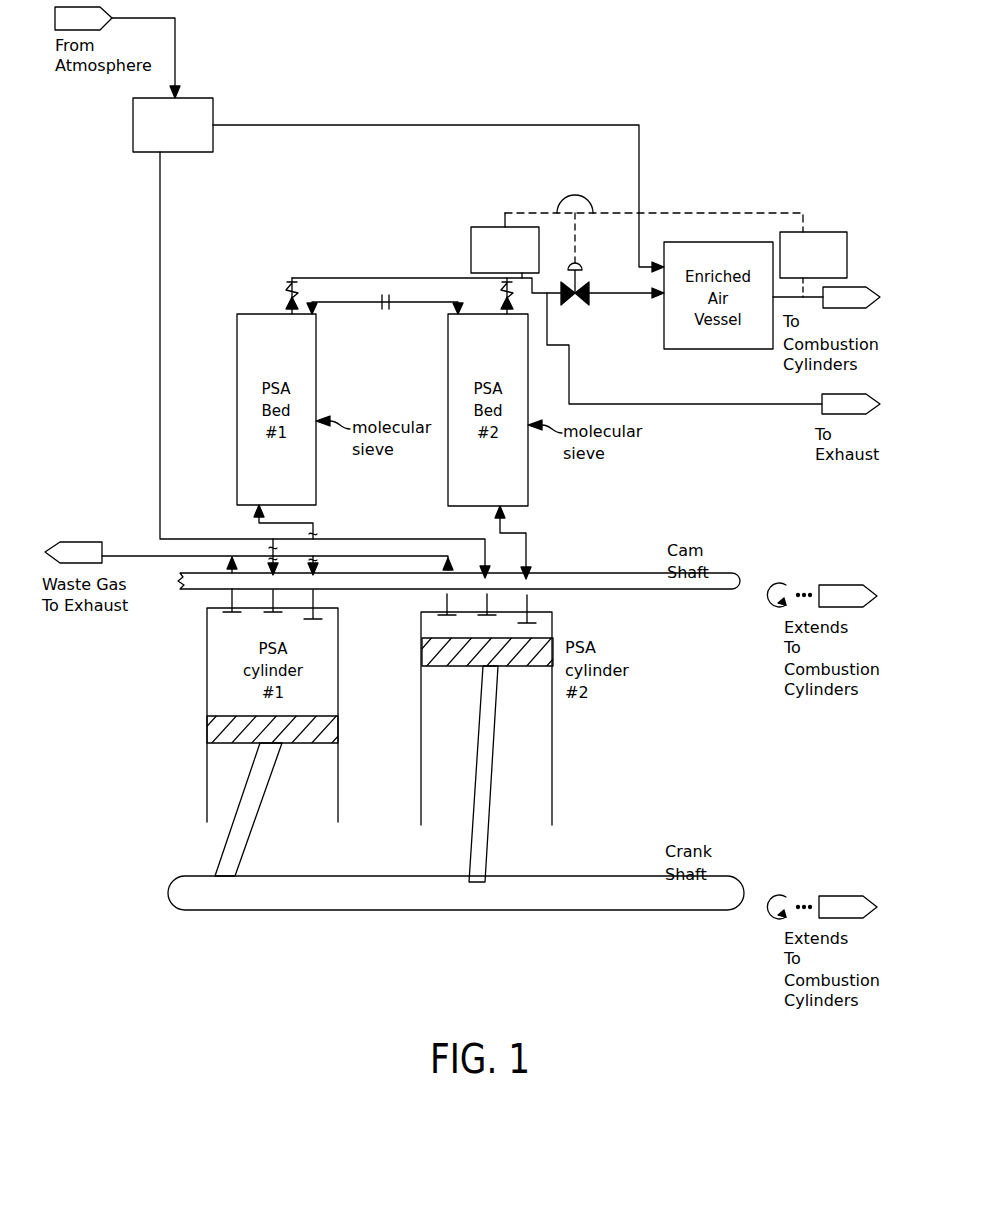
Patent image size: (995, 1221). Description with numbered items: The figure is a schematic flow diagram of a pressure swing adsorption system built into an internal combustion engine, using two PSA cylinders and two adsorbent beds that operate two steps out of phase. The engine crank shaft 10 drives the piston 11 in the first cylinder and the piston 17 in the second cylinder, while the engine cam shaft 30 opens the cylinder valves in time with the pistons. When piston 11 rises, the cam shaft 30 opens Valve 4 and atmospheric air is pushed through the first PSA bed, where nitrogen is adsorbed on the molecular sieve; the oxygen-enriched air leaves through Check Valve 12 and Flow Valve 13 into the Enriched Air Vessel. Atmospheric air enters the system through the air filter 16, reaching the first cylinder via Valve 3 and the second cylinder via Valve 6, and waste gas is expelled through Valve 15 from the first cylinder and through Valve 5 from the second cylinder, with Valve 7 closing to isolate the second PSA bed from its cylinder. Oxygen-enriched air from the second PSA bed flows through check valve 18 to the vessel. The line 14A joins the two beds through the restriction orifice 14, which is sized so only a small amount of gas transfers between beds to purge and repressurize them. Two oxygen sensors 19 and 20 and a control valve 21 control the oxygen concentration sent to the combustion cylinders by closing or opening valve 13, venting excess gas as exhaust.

The valve 3 is at (274, 602).
The valve 4 is at (313, 600).
The valve 5 is at (447, 600).
The valve 6 is at (488, 600).
The valve 7 is at (528, 600).
The crank shaft 10 is at (610, 897).
The piston 11 is at (262, 806).
The check valve 12 is at (290, 302).
The flow valve 13 is at (577, 286).
The restriction orifice 14 is at (391, 306).
The line 14A is at (355, 303).
The valve 15 is at (232, 594).
The air filter 16 is at (210, 113).
The piston 17 is at (490, 762).
The check valve 18 is at (513, 302).
The oxygen sensor 19 is at (480, 227).
The oxygen sensor 20 is at (833, 234).
The control valve 21 is at (576, 199).
The cam shaft 30 is at (632, 590).